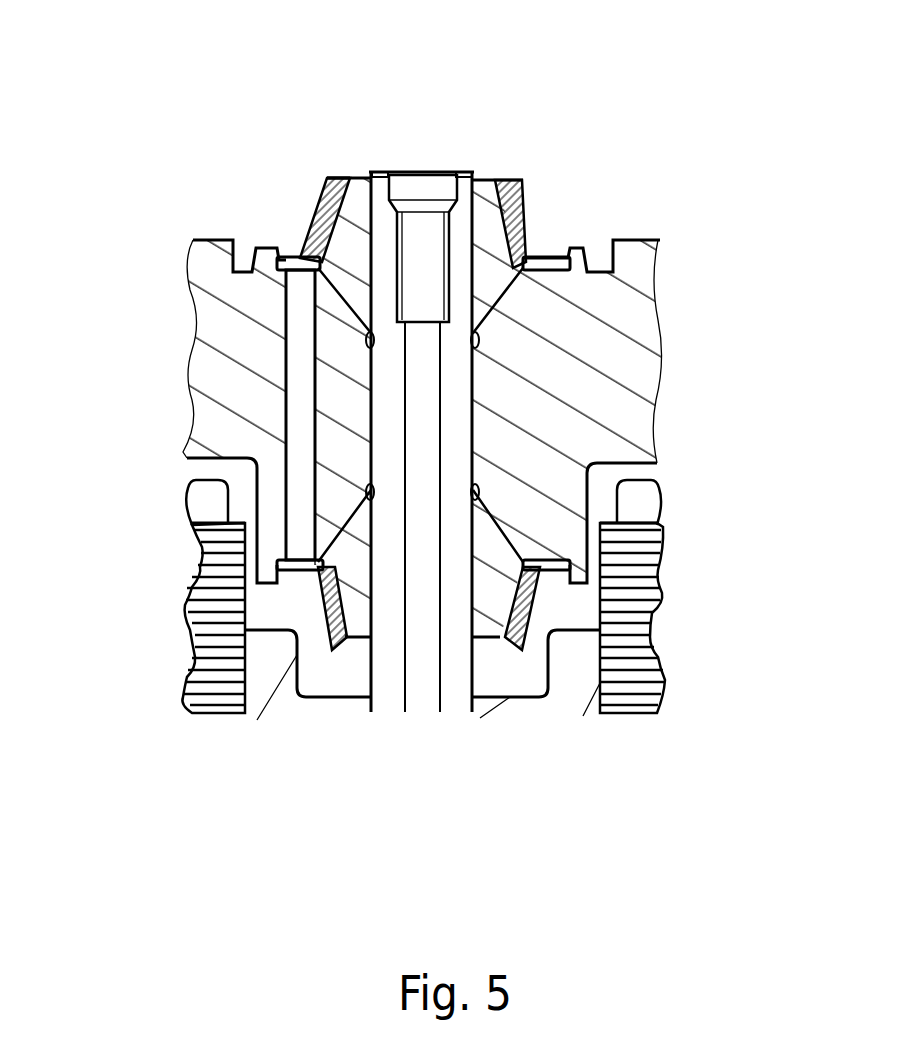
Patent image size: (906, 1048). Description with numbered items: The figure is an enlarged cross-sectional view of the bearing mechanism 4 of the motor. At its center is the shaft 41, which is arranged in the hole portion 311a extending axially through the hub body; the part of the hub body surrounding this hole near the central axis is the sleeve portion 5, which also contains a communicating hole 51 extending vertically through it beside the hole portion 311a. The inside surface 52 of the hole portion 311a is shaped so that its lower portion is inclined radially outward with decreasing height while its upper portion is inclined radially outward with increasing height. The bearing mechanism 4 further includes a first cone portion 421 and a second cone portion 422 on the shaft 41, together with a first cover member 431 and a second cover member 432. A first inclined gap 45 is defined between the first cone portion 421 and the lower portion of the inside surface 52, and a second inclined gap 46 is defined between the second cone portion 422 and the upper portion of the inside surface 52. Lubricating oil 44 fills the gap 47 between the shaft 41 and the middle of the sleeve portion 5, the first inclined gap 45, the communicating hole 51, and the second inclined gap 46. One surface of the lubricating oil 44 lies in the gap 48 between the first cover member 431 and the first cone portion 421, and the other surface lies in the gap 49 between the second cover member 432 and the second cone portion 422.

The bearing mechanism 4 is at (268, 78).
The sleeve portion 5 is at (570, 300).
The shaft 41 is at (457, 677).
The first cone portion 421 is at (503, 650).
The second cone portion 422 is at (490, 215).
The first cover member 431 is at (343, 645).
The second cover member 432 is at (288, 266).
The lubricating oil 44 is at (294, 262).
The first inclined gap 45 is at (507, 525).
The second inclined gap 46 is at (477, 397).
The gap 47 is at (657, 447).
The gap 48 is at (335, 642).
The gap 49 is at (333, 180).
The communicating hole 51 is at (287, 403).
The inside surface 52 is at (480, 296).
The hole portion 311a is at (528, 228).